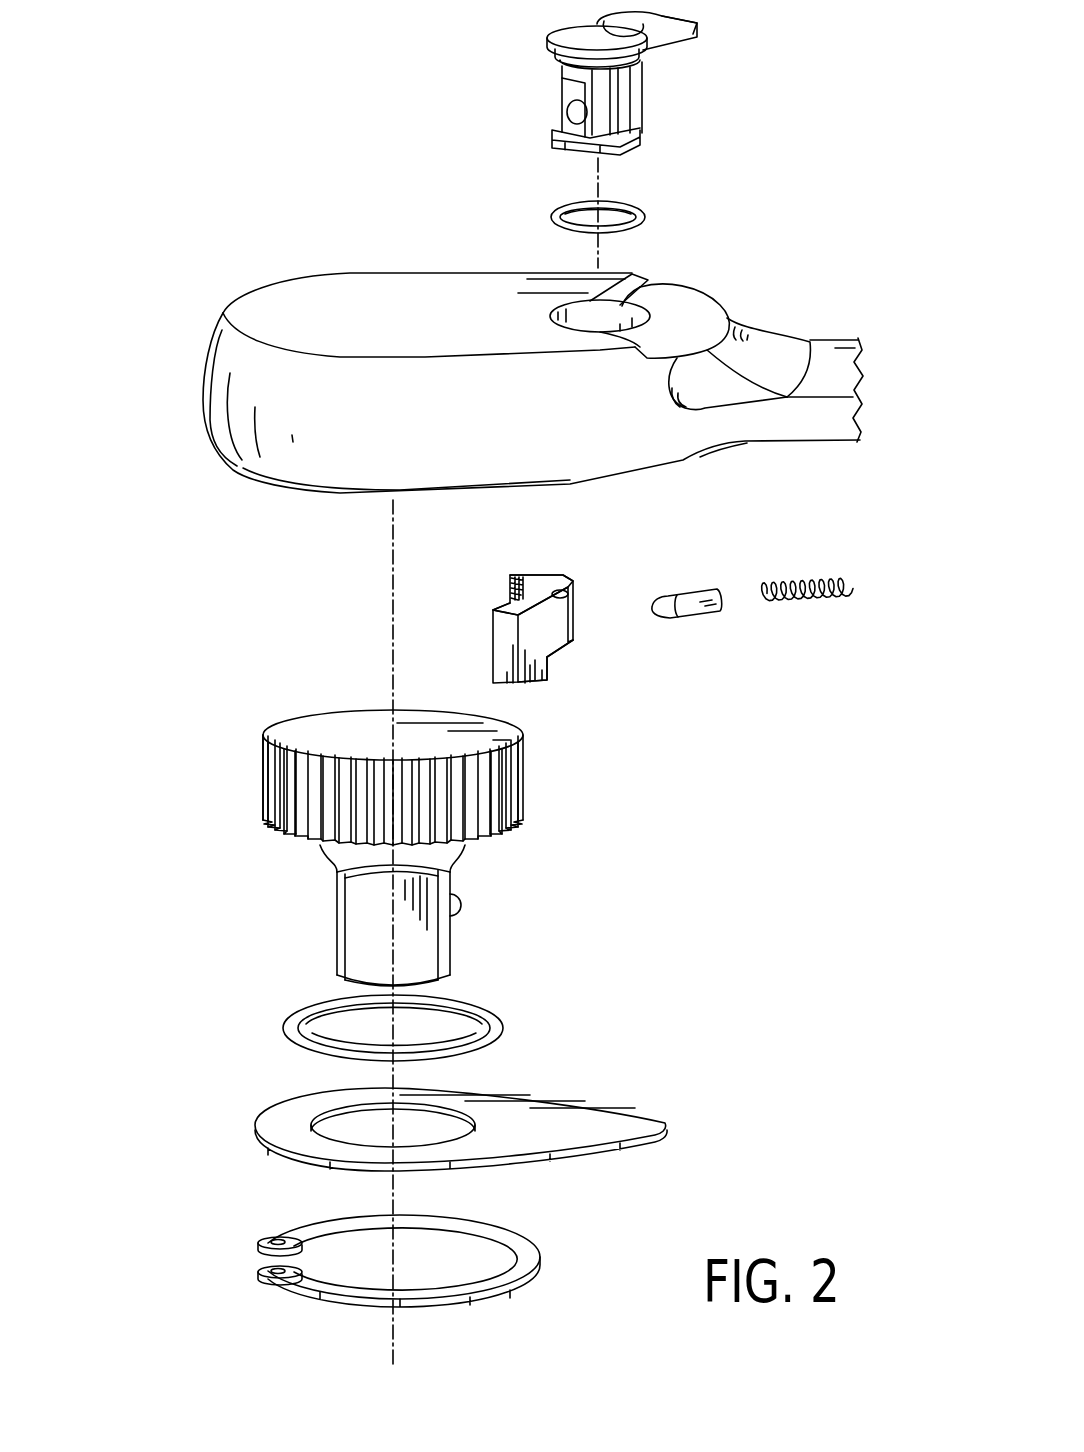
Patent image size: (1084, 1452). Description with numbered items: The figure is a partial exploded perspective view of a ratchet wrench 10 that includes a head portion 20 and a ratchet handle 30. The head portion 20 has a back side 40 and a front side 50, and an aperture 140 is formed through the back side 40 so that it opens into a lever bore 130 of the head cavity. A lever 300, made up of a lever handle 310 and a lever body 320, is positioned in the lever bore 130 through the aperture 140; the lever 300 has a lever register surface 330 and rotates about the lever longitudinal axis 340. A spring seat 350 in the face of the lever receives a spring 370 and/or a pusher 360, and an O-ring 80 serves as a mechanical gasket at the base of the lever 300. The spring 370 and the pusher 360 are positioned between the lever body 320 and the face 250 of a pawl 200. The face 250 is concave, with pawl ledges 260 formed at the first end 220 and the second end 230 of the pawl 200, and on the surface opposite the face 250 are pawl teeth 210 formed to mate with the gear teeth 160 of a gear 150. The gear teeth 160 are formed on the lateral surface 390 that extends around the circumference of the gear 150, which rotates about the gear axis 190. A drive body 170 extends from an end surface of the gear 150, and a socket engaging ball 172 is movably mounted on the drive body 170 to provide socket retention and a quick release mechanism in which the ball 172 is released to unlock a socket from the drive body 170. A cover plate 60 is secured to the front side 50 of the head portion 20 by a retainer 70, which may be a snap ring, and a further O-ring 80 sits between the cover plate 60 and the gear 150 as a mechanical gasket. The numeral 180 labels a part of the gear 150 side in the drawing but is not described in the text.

The ratchet wrench 10 is at (186, 100).
The head portion 20 is at (540, 377).
The ratchet handle 30 is at (829, 423).
The back side 40 is at (385, 299).
The front side 50 is at (296, 494).
The cover plate 60 is at (647, 1120).
The retainer 70 is at (527, 1247).
The O-ring 80 is at (520, 598).
The lever bore 130 is at (573, 311).
The aperture 140 is at (625, 322).
The gear 150 is at (456, 778).
The gear teeth 160 is at (503, 833).
The drive body 170 is at (464, 915).
The ball 172 is at (463, 913).
The gear side wall 180 is at (293, 840).
The gear axis 190 is at (392, 1183).
The pawl 200 is at (548, 627).
The pawl teeth 210 is at (510, 593).
The first end 220 is at (560, 576).
The second end 230 is at (560, 647).
The face 250 is at (577, 597).
The pawl ledges 260 is at (555, 666).
The lever 300 is at (608, 85).
The lever handle 310 is at (667, 27).
The lever body 320 is at (633, 125).
The lever register surface 330 is at (587, 148).
The lever longitudinal axis 340 is at (648, 247).
The spring seat 350 is at (573, 113).
The pusher 360 is at (690, 592).
The spring 370 is at (823, 600).
The lateral surface 390 is at (527, 778).